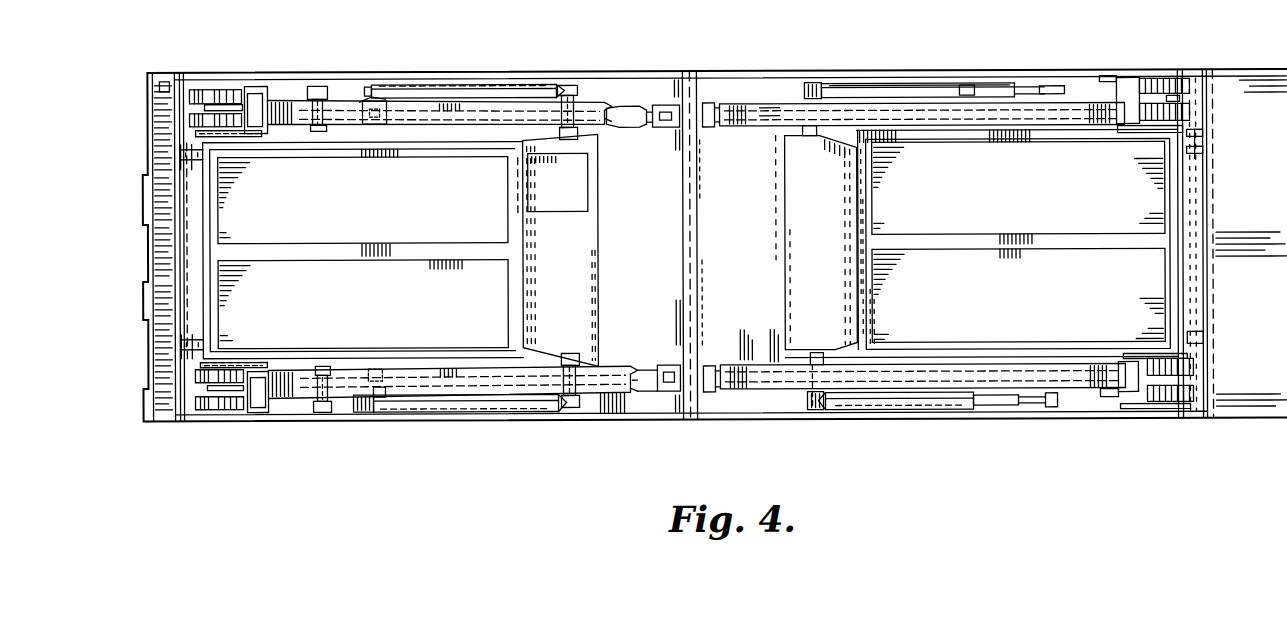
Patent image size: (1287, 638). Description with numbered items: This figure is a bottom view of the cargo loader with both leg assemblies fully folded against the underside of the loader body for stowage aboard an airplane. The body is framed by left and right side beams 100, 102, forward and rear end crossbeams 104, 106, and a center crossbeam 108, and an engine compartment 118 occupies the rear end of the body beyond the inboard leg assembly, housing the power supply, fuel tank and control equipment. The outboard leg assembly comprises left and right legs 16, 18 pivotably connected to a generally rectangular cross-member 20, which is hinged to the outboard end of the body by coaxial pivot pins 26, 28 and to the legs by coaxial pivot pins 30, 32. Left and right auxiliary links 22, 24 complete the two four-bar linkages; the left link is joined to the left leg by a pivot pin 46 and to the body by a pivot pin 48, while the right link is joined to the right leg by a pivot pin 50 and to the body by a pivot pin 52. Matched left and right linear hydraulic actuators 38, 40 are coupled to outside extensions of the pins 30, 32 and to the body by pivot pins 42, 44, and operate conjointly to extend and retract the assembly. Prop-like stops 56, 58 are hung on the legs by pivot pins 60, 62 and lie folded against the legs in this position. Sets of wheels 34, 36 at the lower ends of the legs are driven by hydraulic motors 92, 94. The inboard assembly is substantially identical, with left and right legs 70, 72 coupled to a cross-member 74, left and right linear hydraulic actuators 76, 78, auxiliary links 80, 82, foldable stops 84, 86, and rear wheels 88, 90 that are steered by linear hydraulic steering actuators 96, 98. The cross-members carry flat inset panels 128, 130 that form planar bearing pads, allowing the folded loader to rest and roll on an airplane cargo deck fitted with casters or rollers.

The left leg 16 is at (288, 99).
The right leg 18 is at (300, 397).
The cross-member 20 is at (526, 268).
The left auxiliary link 22 is at (624, 108).
The right auxiliary link 24 is at (625, 394).
The pivot pin 26 is at (196, 166).
The pivot pin 28 is at (196, 348).
The pivot pin 30 is at (568, 85).
The pivot pin 32 is at (572, 408).
The set of wheels 34 is at (208, 88).
The set of wheels 36 is at (200, 410).
The left linear hydraulic piston and cylinder actuator 38 is at (470, 84).
The right linear hydraulic piston and cylinder actuator 40 is at (458, 411).
The pivot pin 42 is at (378, 100).
The pivot pin 44 is at (379, 398).
The pivot pin 46 is at (680, 105).
The pivot pin 48 is at (396, 70).
The pivot pin 50 is at (672, 393).
The pivot pin 52 is at (386, 370).
The stop 56 is at (354, 97).
The stop 58 is at (360, 411).
The pivot pin 60 is at (318, 85).
The pivot pin 62 is at (323, 411).
The left leg 70 is at (1080, 104).
The right leg 72 is at (1097, 391).
The cross-member 74 is at (858, 248).
The left linear hydraulic actuator 76 is at (860, 84).
The right linear hydraulic actuator 78 is at (905, 410).
The left auxiliary link 80 is at (765, 122).
The right auxiliary link 82 is at (801, 410).
The foldable stop 84 is at (1030, 86).
The foldable stop 86 is at (1050, 408).
The rear wheel 88 is at (1175, 82).
The rear wheel 90 is at (1170, 410).
The hydraulic motor 92 is at (252, 85).
The hydraulic motor 94 is at (244, 411).
The linear hydraulic steering actuator 96 is at (1125, 95).
The linear hydraulic steering actuator 98 is at (1135, 393).
The left side beam 100 is at (725, 71).
The right side beam 102 is at (778, 386).
The forward end crossbeam 104 is at (160, 71).
The rear end crossbeam 106 is at (1230, 71).
The center crossbeam 108 is at (713, 400).
The engine compartment 118 is at (1265, 220).
The inset panel 128 is at (390, 206).
The inset panel 130 is at (990, 197).